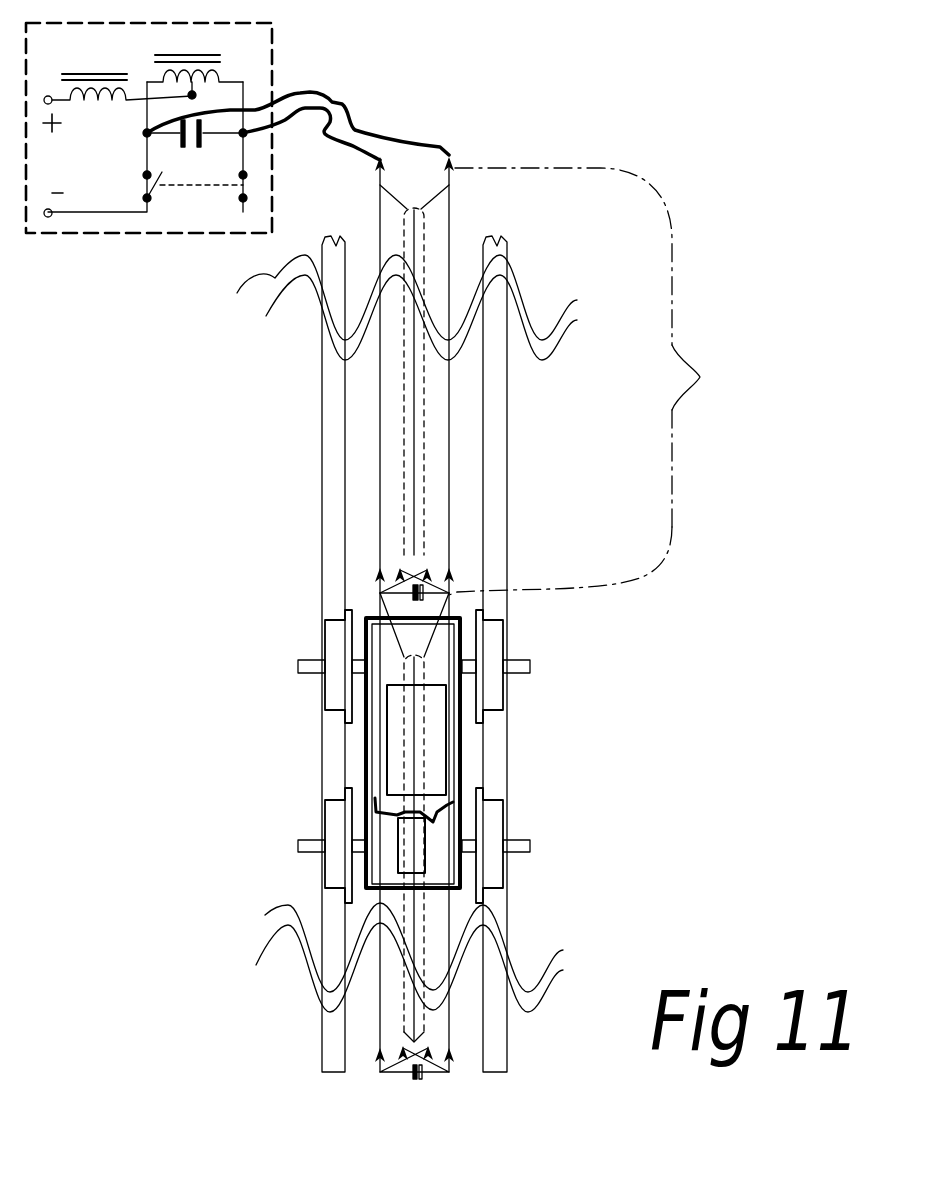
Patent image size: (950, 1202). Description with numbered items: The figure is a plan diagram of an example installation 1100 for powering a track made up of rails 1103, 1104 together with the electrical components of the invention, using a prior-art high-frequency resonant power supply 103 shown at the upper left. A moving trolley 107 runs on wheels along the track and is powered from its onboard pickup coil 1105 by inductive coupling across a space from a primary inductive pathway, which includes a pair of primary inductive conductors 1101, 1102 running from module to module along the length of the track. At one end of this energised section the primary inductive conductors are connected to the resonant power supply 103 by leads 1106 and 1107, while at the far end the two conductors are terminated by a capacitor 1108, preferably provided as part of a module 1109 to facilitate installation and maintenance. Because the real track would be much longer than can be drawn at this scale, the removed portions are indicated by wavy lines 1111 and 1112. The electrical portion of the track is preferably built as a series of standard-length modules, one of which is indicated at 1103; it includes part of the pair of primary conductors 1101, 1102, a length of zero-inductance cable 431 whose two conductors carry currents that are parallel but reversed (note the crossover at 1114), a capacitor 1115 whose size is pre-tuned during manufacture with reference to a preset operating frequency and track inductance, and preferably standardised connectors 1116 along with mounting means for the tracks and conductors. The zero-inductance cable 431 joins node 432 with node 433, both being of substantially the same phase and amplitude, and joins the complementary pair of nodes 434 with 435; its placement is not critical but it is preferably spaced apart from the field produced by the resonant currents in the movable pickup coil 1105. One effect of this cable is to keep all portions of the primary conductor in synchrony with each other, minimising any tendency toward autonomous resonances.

The high-frequency power supply 103 is at (385, 54).
The installation 1100 is at (738, 302).
The lead 1106 is at (433, 117).
The node 432 is at (449, 150).
The lead 1107 is at (378, 158).
The node 434 is at (455, 190).
The rail / module 1103 is at (297, 1063).
The node 435 is at (507, 612).
The wavy line 1111 is at (372, 307).
The lower helical winding 1112 is at (265, 915).
The primary inductive conductor 1102 is at (380, 423).
The primary inductive conductor 1101 is at (598, 412).
The zero-inductance cable 431 is at (405, 470).
The node 433 is at (447, 560).
The crossover 1114 is at (447, 553).
The standardised connectors 1116 is at (412, 588).
The capacitor 1115 is at (402, 604).
The pickup coil 1105 is at (392, 735).
The trolley 107 is at (460, 753).
The rail 1104 is at (608, 1043).
The module 1109 is at (380, 1073).
The capacitor 1108 is at (415, 1086).